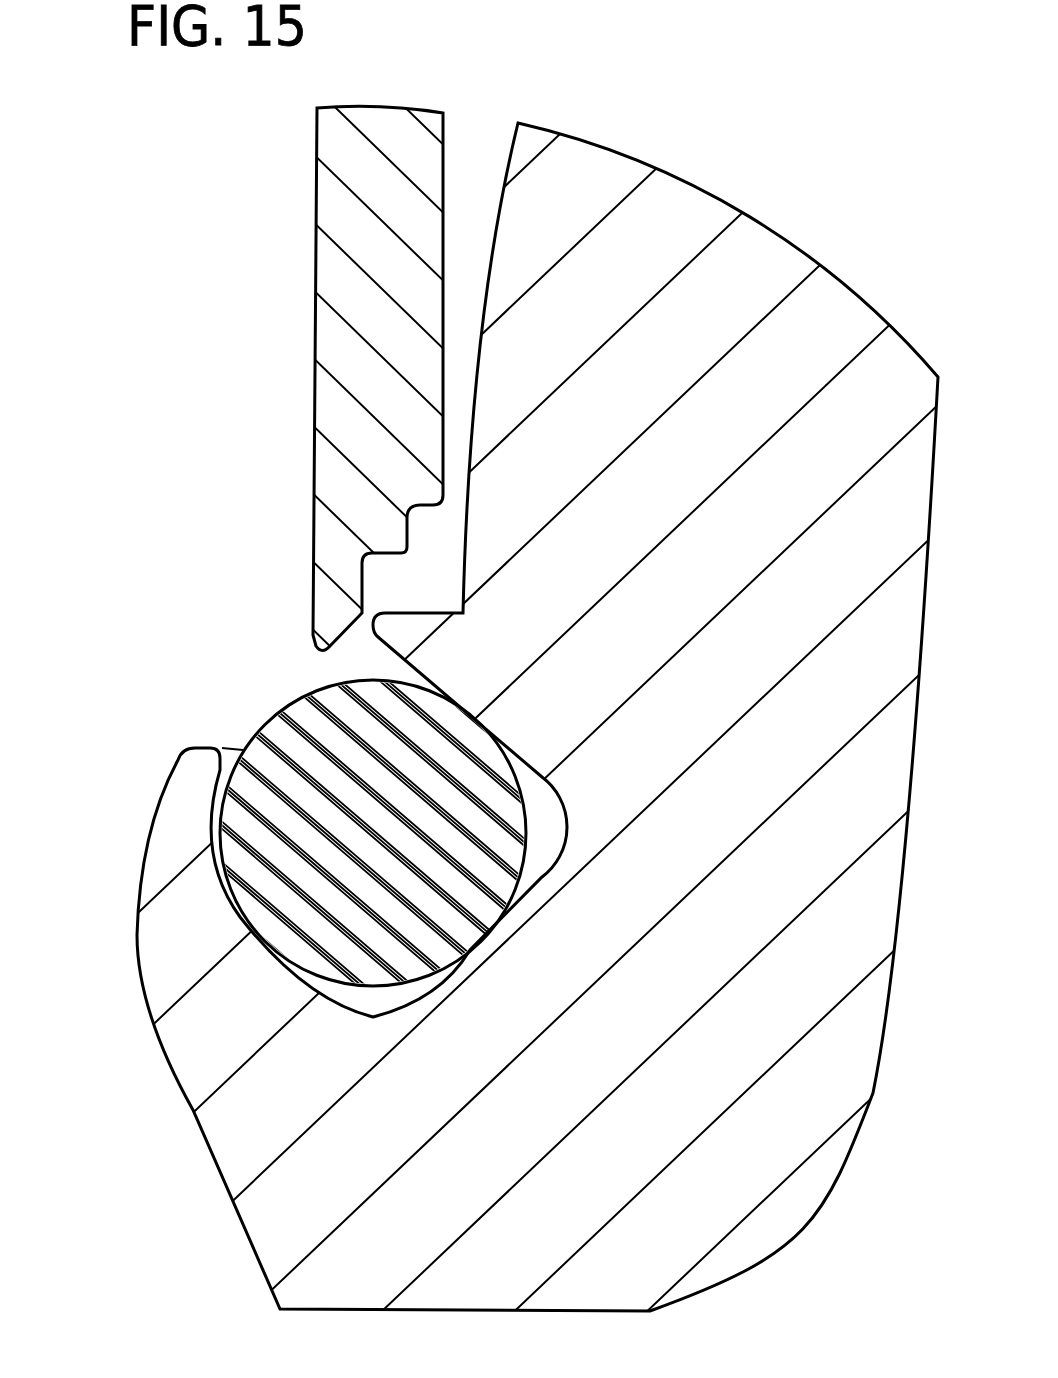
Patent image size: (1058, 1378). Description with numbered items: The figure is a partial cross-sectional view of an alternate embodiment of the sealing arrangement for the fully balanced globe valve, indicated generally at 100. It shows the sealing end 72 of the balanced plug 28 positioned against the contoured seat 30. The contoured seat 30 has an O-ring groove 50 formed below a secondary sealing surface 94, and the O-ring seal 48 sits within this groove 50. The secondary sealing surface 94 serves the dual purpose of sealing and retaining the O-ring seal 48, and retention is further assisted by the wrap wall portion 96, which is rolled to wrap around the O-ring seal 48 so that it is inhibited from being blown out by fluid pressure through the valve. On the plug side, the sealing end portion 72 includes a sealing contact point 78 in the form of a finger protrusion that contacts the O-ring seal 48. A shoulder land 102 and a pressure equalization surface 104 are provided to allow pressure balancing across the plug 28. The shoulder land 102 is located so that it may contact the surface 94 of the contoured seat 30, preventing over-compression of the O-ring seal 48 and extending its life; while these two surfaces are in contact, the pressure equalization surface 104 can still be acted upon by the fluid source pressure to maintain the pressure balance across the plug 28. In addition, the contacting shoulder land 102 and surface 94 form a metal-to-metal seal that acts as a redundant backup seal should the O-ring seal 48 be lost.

The balanced plug 28 is at (330, 271).
The contoured seat 30 is at (622, 172).
The O-ring seal 48 is at (260, 752).
The O-ring groove 50 is at (360, 997).
The sealing end 72 is at (195, 590).
The sealing contact point 78 is at (325, 650).
The secondary sealing surface 94 is at (433, 612).
The wrap wall portion 96 is at (192, 768).
The joint assembly 100 is at (475, 128).
The shoulder land 102 is at (386, 556).
The pressure equalization surface 104 is at (420, 508).